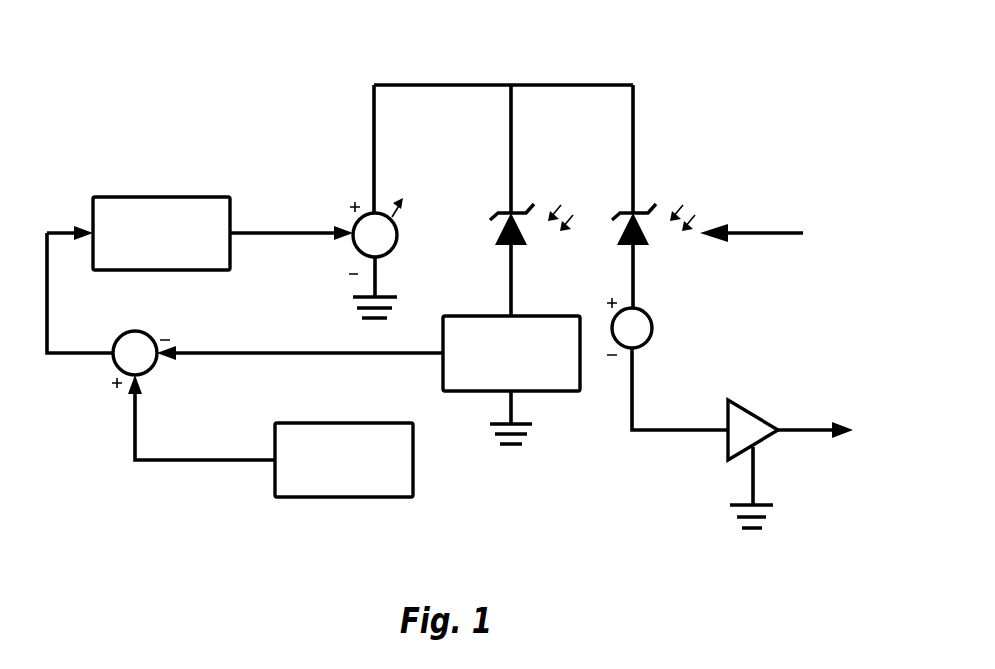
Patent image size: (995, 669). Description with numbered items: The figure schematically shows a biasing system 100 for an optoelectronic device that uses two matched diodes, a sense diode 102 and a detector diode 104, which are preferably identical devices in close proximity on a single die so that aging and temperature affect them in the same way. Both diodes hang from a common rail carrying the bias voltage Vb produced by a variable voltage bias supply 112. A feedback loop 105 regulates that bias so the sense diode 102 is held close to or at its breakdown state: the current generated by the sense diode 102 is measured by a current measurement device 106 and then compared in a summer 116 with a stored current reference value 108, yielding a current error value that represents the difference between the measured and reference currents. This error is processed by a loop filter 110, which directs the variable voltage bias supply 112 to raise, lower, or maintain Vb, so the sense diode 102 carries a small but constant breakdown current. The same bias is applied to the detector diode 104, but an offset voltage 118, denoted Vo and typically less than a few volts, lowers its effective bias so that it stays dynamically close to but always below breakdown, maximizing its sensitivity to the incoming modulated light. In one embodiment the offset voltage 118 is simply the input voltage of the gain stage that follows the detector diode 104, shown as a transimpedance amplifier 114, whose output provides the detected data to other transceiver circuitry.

The biasing system 100 is at (541, 66).
The sense diode 102 is at (520, 208).
The detector diode 104 is at (640, 208).
The feedback loop 105 is at (189, 158).
The current measurement device 106 is at (540, 391).
The current reference value 108 is at (368, 497).
The loop filter 110 is at (160, 197).
The variable voltage bias supply 112 is at (345, 253).
The transimpedance amplifier 114 is at (765, 418).
The summer 116 is at (113, 367).
The offset voltage 118 is at (648, 344).